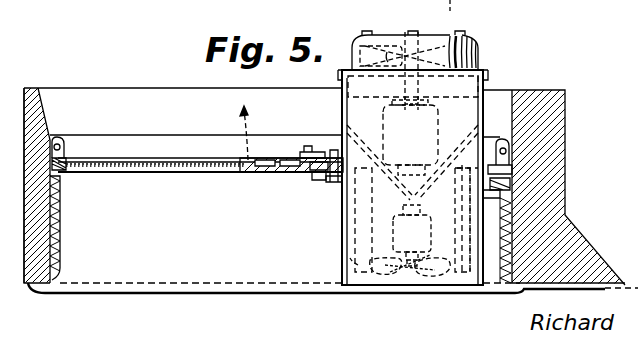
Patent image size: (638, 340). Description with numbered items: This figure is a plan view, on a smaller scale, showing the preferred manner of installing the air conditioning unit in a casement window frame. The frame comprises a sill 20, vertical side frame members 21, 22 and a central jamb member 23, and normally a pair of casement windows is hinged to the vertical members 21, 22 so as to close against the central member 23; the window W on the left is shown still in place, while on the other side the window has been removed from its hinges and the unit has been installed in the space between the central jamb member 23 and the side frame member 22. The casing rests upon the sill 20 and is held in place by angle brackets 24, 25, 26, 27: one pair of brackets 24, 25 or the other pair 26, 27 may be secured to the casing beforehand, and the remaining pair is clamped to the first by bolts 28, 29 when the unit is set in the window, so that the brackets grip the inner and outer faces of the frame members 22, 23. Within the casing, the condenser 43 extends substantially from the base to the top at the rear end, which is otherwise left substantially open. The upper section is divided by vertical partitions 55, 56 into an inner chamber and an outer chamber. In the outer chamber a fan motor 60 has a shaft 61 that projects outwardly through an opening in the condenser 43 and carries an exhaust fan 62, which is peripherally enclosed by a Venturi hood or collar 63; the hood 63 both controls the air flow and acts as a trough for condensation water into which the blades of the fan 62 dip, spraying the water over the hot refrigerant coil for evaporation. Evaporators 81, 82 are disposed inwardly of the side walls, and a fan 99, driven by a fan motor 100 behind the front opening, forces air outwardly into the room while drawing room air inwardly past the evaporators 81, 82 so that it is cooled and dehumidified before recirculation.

The sill 20 is at (218, 270).
The vertical side frame member 21 is at (62, 154).
The vertical side frame member 22 is at (503, 168).
The central jamb member 23 is at (276, 173).
The angle bracket 24 is at (306, 158).
The angle bracket 25 is at (497, 152).
The angle bracket 26 is at (332, 187).
The angle bracket 27 is at (490, 195).
The bolt 28 is at (322, 182).
The bolt 29 is at (500, 190).
The condenser 43 is at (486, 81).
The vertical partition 55 is at (442, 170).
The vertical partition 56 is at (372, 172).
The fan motor 60 is at (439, 133).
The shaft 61 is at (400, 104).
The exhaust fan 62 is at (390, 30).
The Venturi hood 63 is at (470, 47).
The evaporator 81 is at (537, 247).
The evaporator 82 is at (346, 240).
The fan 99 is at (377, 292).
The fan motor 100 is at (455, 291).
The workpiece W is at (145, 163).